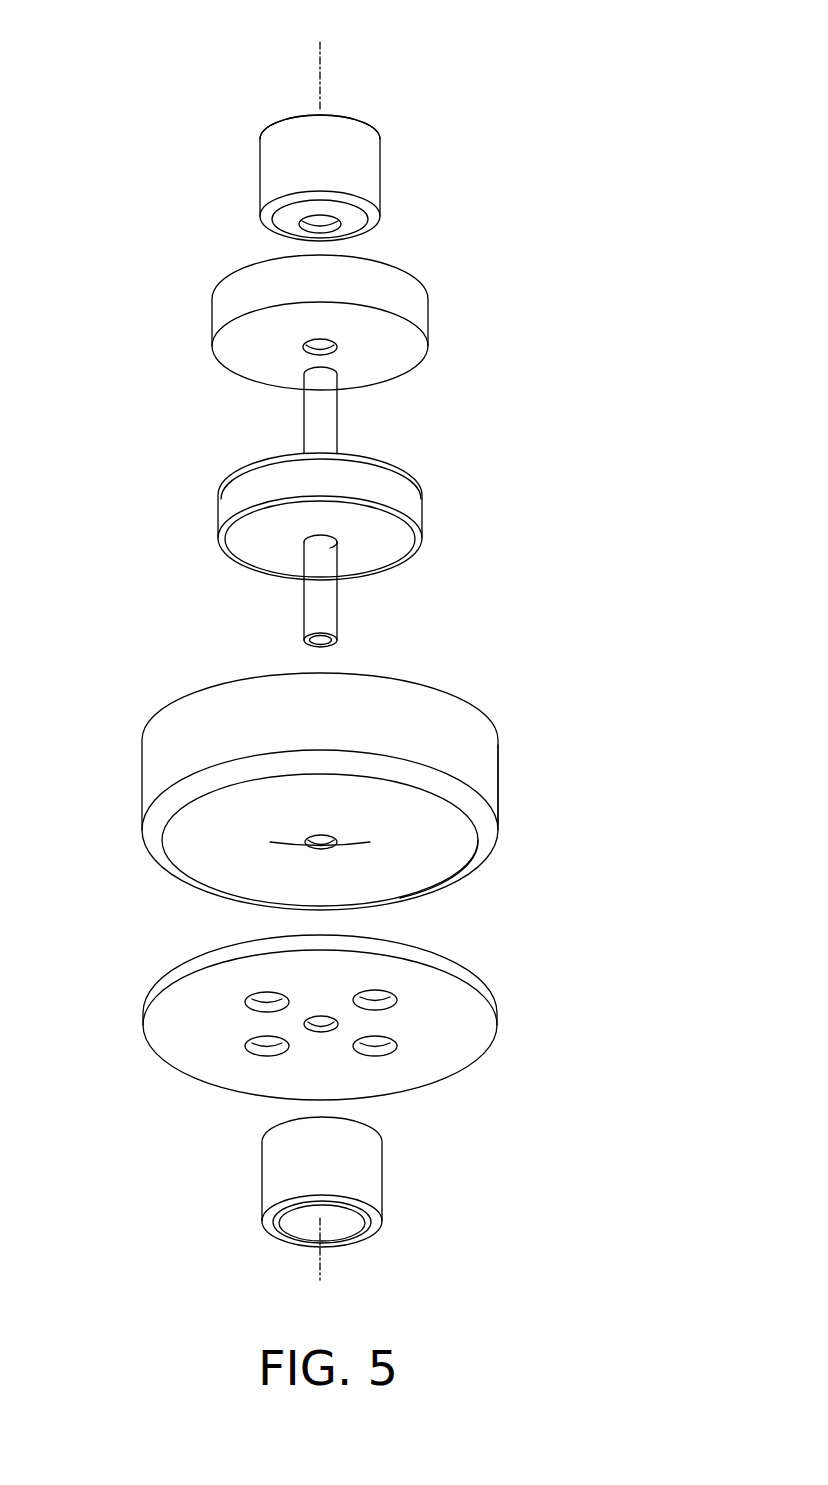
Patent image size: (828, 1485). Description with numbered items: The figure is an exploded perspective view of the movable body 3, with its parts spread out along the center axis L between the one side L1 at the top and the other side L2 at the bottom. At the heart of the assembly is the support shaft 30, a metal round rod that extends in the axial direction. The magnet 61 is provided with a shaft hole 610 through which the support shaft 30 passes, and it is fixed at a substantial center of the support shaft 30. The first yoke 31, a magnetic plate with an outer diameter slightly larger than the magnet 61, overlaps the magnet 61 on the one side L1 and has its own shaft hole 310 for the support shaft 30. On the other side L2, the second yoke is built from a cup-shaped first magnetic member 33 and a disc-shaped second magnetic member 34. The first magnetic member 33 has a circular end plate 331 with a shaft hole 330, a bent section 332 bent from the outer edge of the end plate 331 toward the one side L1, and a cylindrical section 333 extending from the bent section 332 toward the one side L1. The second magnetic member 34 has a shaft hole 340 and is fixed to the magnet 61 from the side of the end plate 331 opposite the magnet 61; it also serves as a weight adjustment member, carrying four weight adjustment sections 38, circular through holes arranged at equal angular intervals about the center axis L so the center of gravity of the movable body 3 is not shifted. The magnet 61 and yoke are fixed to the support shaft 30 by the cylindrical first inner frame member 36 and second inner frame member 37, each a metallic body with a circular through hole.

The movable body 3 is at (150, 133).
The support shaft 30 is at (350, 603).
The first yoke 31 is at (443, 310).
The shaft hole 310 is at (335, 352).
The first magnetic member 33 is at (510, 727).
The shaft hole 330 is at (305, 848).
The end plate 331 is at (438, 859).
The bent section 332 is at (488, 818).
The cylindrical section 333 is at (503, 775).
The second magnetic member 34 is at (512, 993).
The shaft hole 340 is at (318, 1033).
The first inner frame member 36 is at (396, 175).
The second inner frame member 37 is at (397, 1170).
The weight adjustment section 38 is at (255, 1012).
The magnet 61 is at (440, 503).
The shaft hole 610 is at (337, 541).
The center axis L is at (320, 58).
The one side L1 is at (318, 63).
The other side L2 is at (322, 1263).